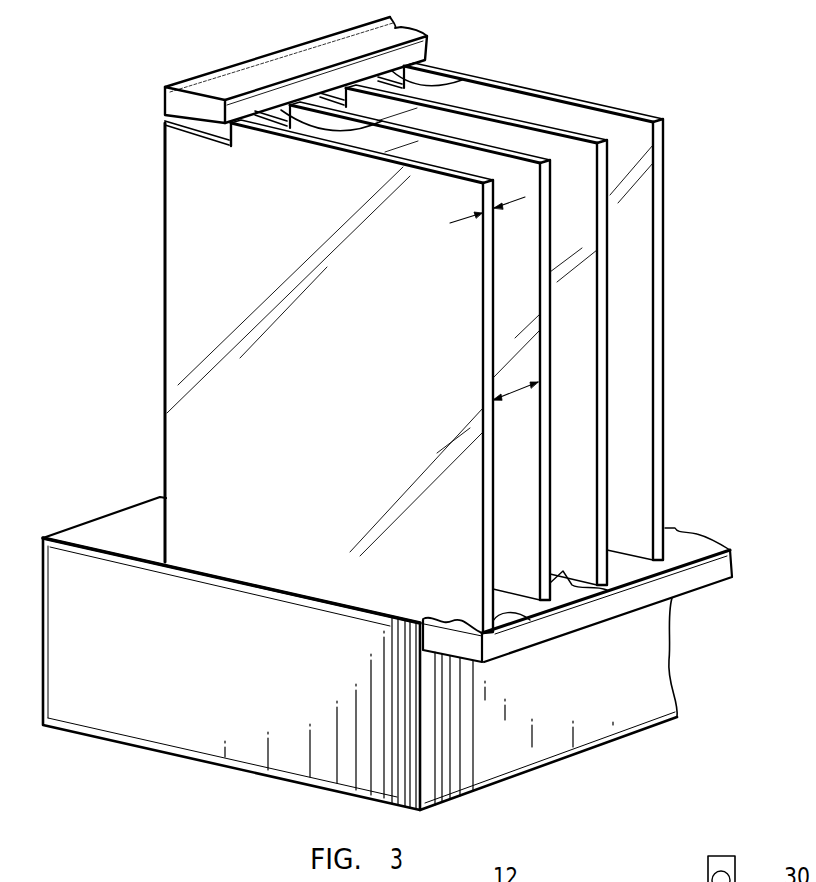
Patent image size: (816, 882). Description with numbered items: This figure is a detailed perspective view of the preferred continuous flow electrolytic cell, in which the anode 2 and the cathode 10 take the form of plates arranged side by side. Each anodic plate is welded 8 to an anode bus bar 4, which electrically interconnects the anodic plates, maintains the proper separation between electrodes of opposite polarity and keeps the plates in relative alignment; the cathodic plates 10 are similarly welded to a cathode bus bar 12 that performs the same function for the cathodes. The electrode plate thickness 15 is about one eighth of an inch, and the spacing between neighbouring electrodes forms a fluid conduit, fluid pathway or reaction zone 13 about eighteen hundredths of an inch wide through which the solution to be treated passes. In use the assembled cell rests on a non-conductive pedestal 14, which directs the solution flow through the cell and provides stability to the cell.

The anode 2 is at (528, 125).
The anode bus bar 4 is at (694, 582).
The weld 8 is at (460, 78).
The cathode 10 is at (466, 348).
The cathode bus bar 12 is at (255, 65).
The reaction zone 13 is at (516, 392).
The non-conductive pedestal 14 is at (232, 686).
The electrode plate thickness 15 is at (468, 225).